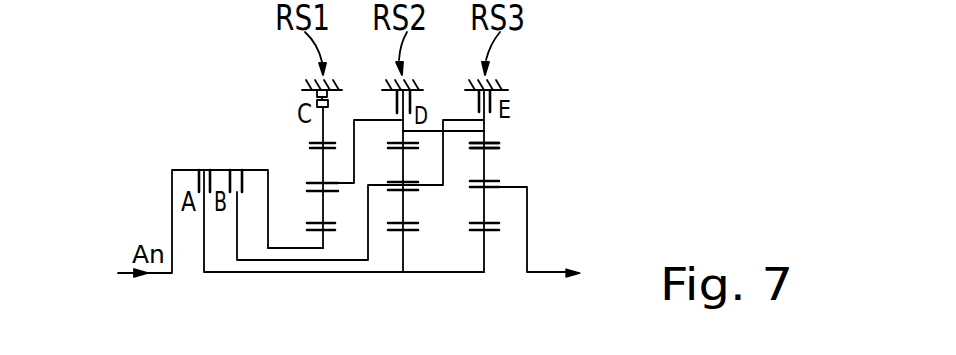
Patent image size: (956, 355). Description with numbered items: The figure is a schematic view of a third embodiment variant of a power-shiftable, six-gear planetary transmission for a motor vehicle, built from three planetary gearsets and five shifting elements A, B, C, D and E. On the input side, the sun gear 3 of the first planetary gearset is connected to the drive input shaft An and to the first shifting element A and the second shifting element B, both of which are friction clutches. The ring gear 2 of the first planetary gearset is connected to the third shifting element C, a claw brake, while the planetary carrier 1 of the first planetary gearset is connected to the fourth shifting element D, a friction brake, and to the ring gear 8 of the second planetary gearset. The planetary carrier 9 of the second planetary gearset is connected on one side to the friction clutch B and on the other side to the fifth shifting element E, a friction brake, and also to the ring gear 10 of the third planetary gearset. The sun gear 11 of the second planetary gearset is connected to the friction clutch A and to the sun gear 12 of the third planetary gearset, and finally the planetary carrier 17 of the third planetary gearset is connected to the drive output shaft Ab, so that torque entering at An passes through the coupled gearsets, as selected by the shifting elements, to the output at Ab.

The planetary carrier 1 is at (347, 193).
The ring gear 2 is at (322, 127).
The sun gear 3 is at (278, 252).
The ring gear 8 is at (485, 131).
The planetary carrier 9 is at (432, 185).
The ring gear 10 is at (488, 138).
The sun gear 11 is at (402, 247).
The sun gear 12 is at (488, 253).
The planetary carrier 17 is at (514, 184).